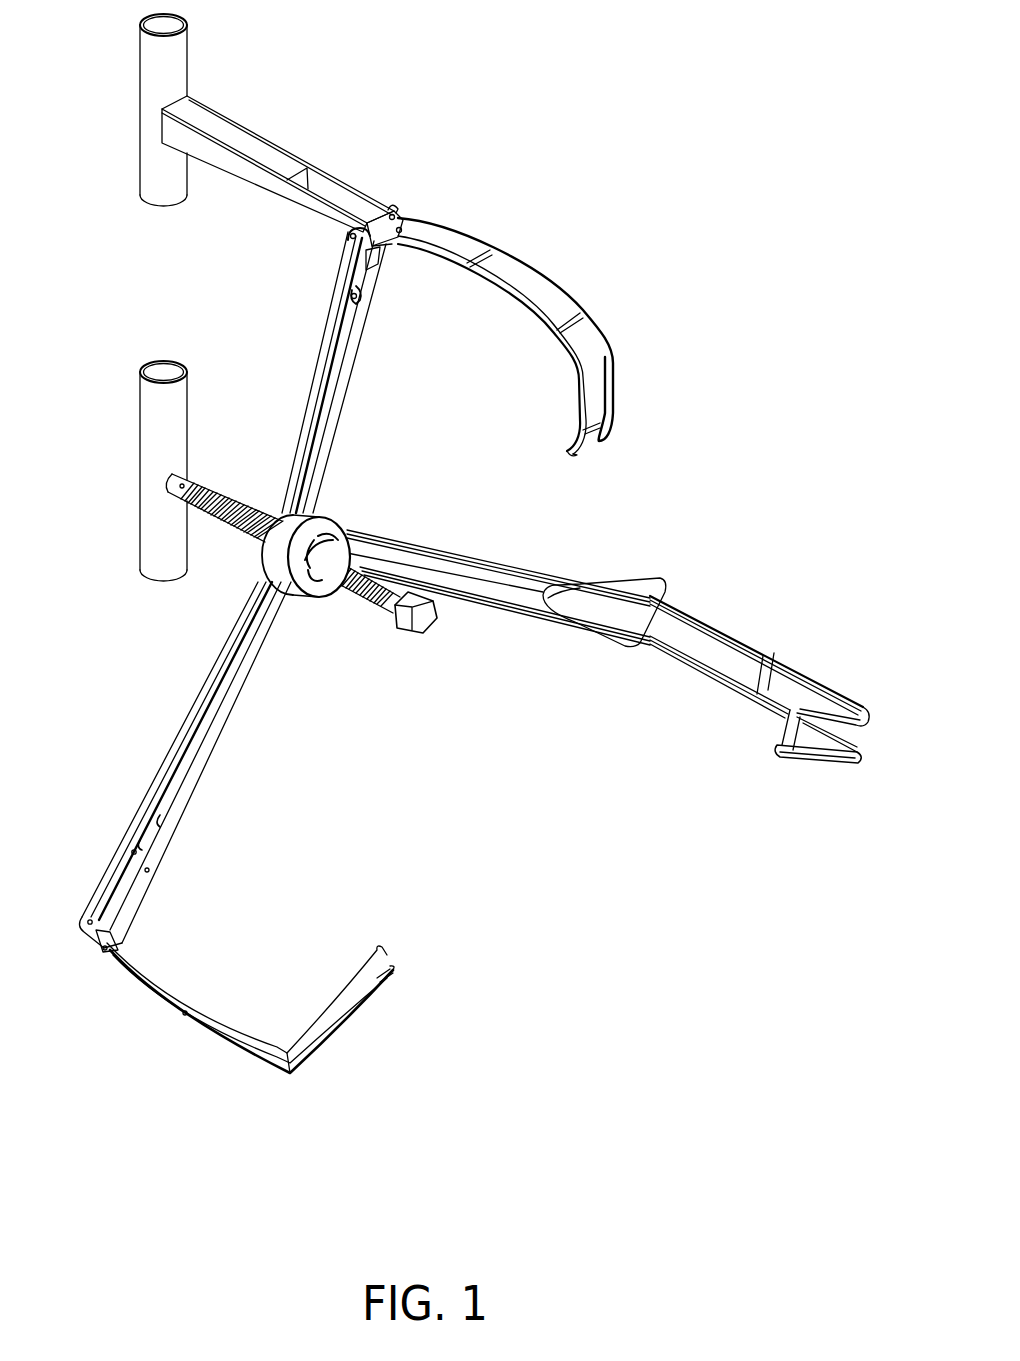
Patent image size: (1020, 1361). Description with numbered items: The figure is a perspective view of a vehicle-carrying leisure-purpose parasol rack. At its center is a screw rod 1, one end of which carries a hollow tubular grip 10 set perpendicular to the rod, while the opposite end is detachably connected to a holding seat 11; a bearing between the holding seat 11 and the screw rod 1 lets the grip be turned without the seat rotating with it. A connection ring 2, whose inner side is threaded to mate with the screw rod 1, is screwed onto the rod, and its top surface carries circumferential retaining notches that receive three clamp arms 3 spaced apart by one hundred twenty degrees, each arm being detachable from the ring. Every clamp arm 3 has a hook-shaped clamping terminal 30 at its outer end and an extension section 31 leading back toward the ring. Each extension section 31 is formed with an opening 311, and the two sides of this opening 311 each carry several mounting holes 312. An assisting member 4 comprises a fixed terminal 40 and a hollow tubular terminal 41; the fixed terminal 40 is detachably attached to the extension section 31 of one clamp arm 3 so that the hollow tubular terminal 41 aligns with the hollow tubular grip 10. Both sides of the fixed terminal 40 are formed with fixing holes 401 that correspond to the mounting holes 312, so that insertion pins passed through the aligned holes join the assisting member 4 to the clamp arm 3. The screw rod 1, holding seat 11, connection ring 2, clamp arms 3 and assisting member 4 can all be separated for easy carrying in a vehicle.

The screw rod 1 is at (227, 493).
The connection ring 2 is at (277, 550).
The clamp arm 3 is at (405, 432).
The assisting member 4 is at (236, 132).
The hollow tubular grip 10 is at (155, 422).
The holding seat 11 is at (432, 622).
The clamping terminal 30 is at (603, 347).
The extension section 31 is at (350, 263).
The fixed terminal 40 is at (362, 208).
The hollow tubular terminal 41 is at (155, 76).
The opening 311 is at (633, 612).
The mounting holes 312 is at (346, 232).
The fixing holes 401 is at (400, 230).